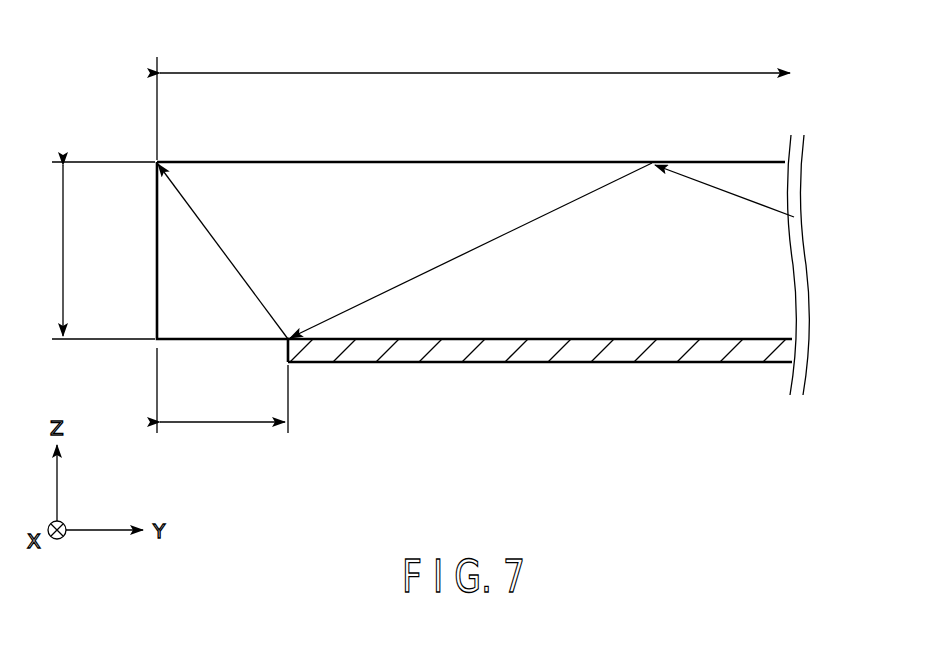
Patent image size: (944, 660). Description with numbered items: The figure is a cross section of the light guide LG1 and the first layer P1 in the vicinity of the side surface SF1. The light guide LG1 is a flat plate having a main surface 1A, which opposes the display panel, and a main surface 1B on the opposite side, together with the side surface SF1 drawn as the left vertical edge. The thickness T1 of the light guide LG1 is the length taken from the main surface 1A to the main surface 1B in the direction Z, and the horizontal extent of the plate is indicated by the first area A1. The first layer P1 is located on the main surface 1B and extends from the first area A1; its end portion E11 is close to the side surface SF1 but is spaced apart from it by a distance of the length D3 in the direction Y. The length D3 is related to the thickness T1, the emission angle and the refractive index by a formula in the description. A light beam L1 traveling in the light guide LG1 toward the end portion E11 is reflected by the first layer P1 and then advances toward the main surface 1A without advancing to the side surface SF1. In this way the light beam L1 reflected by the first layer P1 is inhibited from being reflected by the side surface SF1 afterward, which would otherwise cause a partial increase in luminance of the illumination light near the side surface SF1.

The main surface 1A is at (496, 160).
The main surface 1B is at (534, 344).
The first layer P1 is at (651, 357).
The light guide LG1 is at (780, 262).
The light beam L1 is at (476, 251).
The side surface SF1 is at (154, 257).
The end portion E11 is at (285, 354).
The first area A1 is at (473, 104).
The thickness T1 is at (94, 250).
The length D3 is at (222, 401).